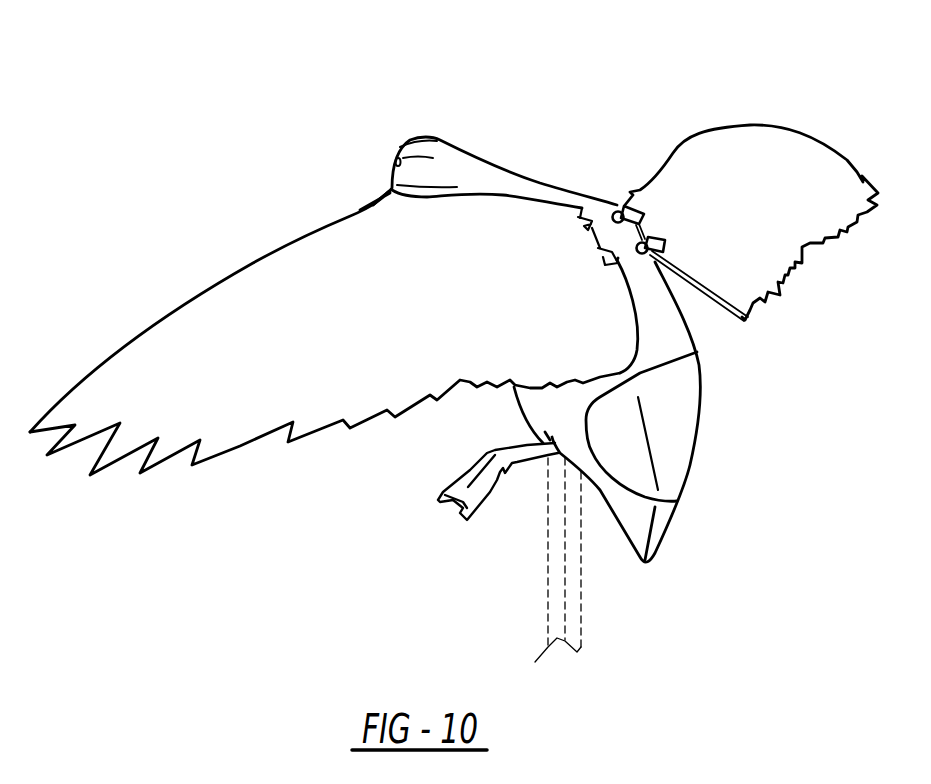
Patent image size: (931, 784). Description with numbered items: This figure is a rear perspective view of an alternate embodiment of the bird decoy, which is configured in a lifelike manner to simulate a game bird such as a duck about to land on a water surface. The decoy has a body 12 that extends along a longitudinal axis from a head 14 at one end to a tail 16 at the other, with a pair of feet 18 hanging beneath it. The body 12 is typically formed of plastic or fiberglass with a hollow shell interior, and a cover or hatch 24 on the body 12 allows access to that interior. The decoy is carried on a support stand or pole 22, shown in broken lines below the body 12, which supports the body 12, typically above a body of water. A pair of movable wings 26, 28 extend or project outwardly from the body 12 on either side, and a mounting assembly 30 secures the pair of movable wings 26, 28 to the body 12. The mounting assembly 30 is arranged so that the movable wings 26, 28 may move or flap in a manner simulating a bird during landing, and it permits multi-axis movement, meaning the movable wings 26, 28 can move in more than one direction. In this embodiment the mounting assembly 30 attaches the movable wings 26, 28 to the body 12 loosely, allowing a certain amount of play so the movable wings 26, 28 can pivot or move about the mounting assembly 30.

The body 12 is at (594, 206).
The head 14 is at (432, 145).
The tail 16 is at (665, 522).
The feet 18 is at (445, 503).
The support stand or pole 22 is at (572, 601).
The cover or hatch 24 is at (677, 415).
The movable wing 26 is at (265, 305).
The movable wing 28 is at (707, 160).
The mounting assembly 30 is at (617, 205).